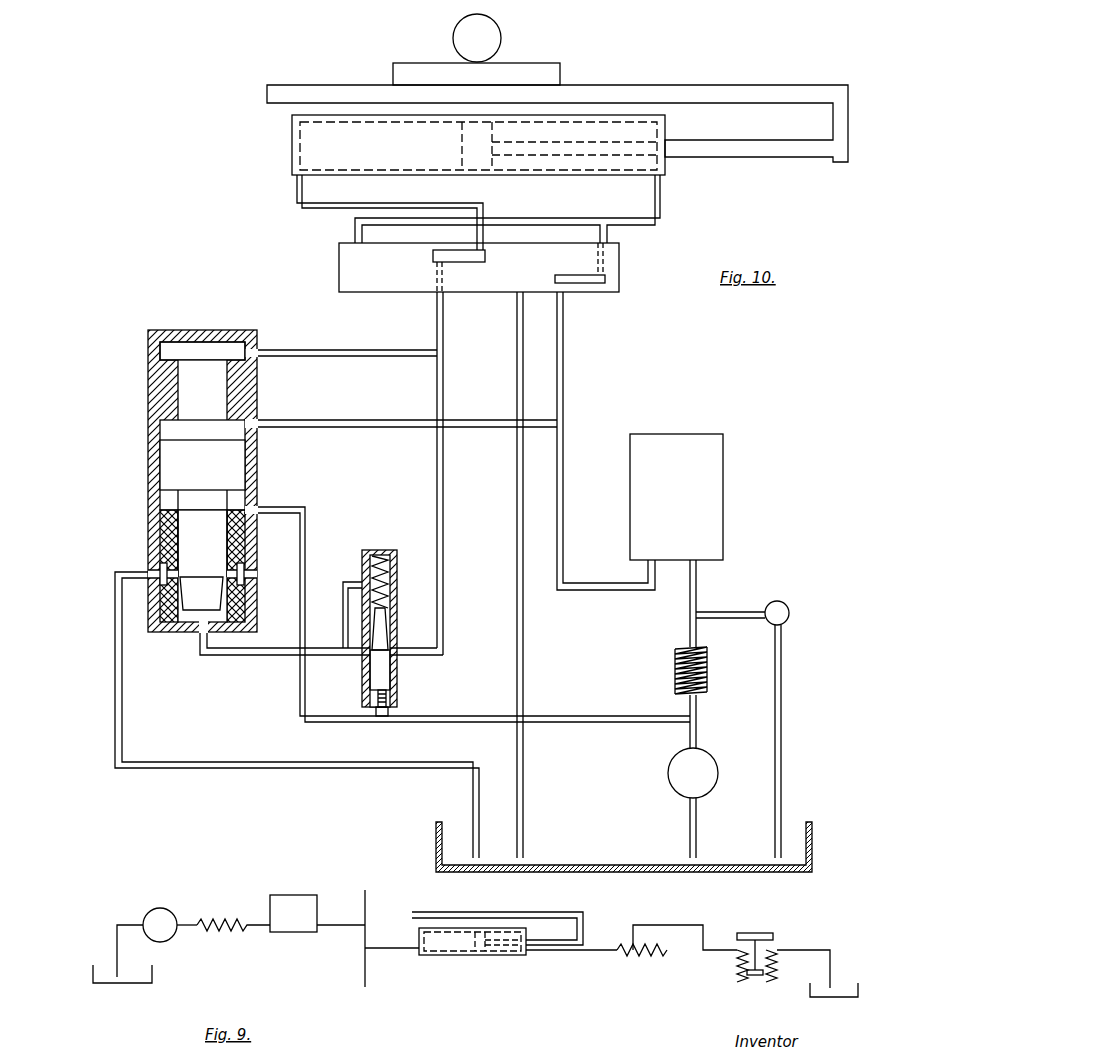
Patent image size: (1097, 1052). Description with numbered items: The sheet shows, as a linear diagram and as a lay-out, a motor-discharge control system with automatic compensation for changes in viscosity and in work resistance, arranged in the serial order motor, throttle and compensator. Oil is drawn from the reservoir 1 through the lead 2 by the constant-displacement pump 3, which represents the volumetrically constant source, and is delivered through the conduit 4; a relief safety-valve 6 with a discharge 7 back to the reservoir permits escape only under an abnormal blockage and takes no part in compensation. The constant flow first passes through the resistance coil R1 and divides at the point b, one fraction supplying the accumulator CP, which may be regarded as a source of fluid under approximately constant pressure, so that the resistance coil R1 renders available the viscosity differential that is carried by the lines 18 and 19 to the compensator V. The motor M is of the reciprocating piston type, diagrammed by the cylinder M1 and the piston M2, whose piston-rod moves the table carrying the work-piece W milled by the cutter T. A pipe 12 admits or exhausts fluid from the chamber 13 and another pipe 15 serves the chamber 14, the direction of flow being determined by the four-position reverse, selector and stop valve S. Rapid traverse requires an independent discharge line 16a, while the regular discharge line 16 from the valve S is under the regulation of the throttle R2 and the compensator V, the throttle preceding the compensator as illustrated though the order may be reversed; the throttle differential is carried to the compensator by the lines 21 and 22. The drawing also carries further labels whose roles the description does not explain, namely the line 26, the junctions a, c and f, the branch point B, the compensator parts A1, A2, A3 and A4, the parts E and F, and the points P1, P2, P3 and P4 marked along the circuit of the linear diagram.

In FIG. 10, the reservoir 1 is at (436, 840).
In FIG. 9, the reservoir 1 is at (152, 978).
In FIG. 10, the lead 2 is at (696, 828).
In FIG. 9, the lead 2 is at (135, 924).
In FIG. 10, the constant-displacement pump 3 is at (668, 773).
In FIG. 10, the conduit 4 is at (563, 370).
In FIG. 10, the relief safety-valve 6 is at (789, 611).
In FIG. 10, the discharge 7 is at (781, 704).
In FIG. 10, the pipe 12 is at (660, 208).
In FIG. 10, the chamber 13 is at (585, 163).
In FIG. 10, the chamber 14 is at (347, 151).
In FIG. 10, the pipe 15 is at (297, 195).
In FIG. 10, the regular discharge line 16 is at (437, 320).
In FIG. 10, the independent discharge line 16a is at (510, 548).
In FIG. 10, the line 18 is at (326, 580).
In FIG. 10, the line 19 is at (364, 420).
In FIG. 10, the line 21 is at (345, 350).
In FIG. 10, the line 22 is at (338, 655).
In FIG. 10, the pipe 26 is at (122, 680).
In FIG. 10, the cutter T is at (500, 28).
In FIG. 10, the work-piece W is at (537, 62).
In FIG. 10, the motor M is at (290, 150).
In FIG. 9, the motor M is at (468, 960).
In FIG. 10, the cylinder M1 is at (292, 128).
In FIG. 9, the cylinder M1 is at (420, 955).
In FIG. 10, the piston M2 is at (468, 145).
In FIG. 10, the four-position reverse, selector and stop valve S is at (338, 262).
In FIG. 10, the junction c is at (456, 350).
In FIG. 10, the dividing point b is at (650, 562).
In FIG. 10, the junction a is at (672, 713).
In FIG. 10, the junction f is at (345, 612).
In FIG. 10, the auxiliary cylinder A1 is at (158, 502).
In FIG. 10, the piston A2 is at (168, 438).
In FIG. 10, the upper chamber A3 is at (240, 322).
In FIG. 10, the lower piston A4 is at (217, 580).
In FIG. 10, the compensator V is at (160, 570).
In FIG. 9, the compensator V is at (740, 975).
In FIG. 10, the pressure point P1 is at (467, 604).
In FIG. 9, the pressure point P1 is at (190, 914).
In FIG. 9, the pressure point P2 is at (392, 940).
In FIG. 9, the pressure point P3 is at (571, 939).
In FIG. 9, the pressure point P4 is at (718, 940).
In FIG. 10, the resistance coil R1 is at (707, 672).
In FIG. 9, the resistance coil R1 is at (240, 932).
In FIG. 10, the throttle R2 is at (397, 610).
In FIG. 9, the throttle R2 is at (660, 957).
In FIG. 10, the chamber E is at (378, 671).
In FIG. 10, the adjusting nut F is at (390, 716).
In FIG. 10, the accumulator CP is at (676, 497).
In FIG. 9, the accumulator CP is at (293, 913).
In FIG. 9, the branch point B is at (366, 908).